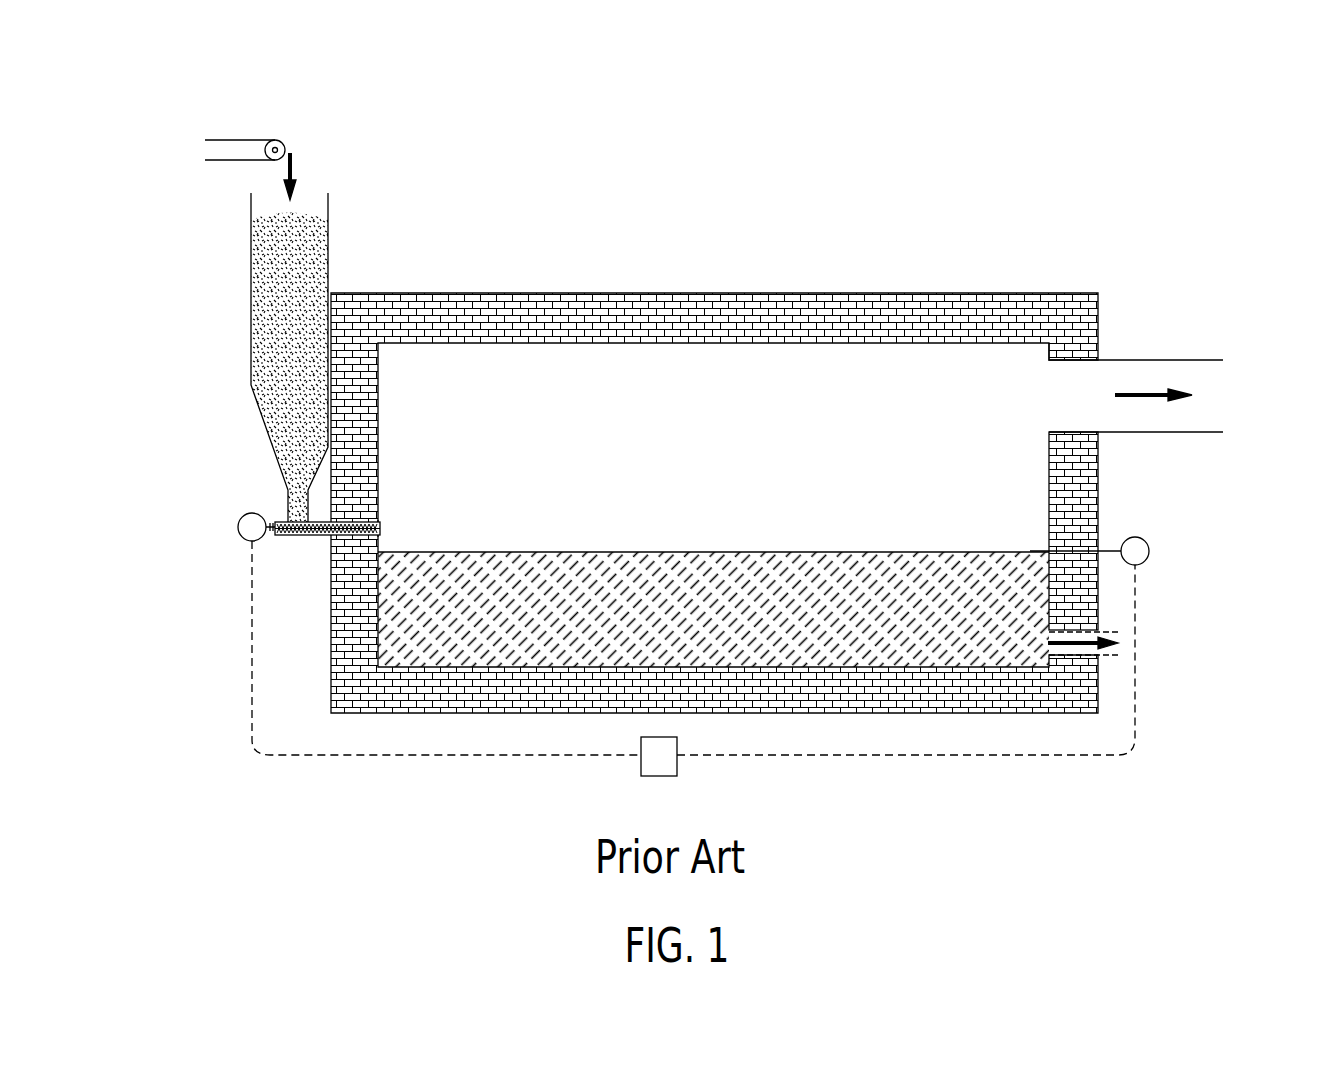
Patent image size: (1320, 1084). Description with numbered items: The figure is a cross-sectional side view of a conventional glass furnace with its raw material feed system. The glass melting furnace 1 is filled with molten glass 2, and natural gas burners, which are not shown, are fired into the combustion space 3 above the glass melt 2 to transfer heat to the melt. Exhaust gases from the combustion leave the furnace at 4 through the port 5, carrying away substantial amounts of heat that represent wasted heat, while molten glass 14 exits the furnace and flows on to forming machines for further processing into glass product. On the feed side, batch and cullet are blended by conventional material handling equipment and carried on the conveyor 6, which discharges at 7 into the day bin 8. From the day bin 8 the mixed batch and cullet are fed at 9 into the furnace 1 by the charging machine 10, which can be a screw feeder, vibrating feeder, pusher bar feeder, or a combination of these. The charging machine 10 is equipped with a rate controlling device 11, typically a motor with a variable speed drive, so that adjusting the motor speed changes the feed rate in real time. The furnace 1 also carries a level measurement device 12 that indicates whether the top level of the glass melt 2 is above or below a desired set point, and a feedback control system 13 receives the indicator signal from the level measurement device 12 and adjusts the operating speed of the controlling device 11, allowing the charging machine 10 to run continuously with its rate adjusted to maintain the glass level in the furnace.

The glass melting furnace 1 is at (710, 320).
The molten glass 2 is at (738, 606).
The combustion space 3 is at (886, 440).
The exhaust gas exit 4 is at (1142, 395).
The port 5 is at (1073, 358).
The conveyor 6 is at (262, 140).
The conveyor discharge 7 is at (290, 167).
The day bin 8 is at (328, 263).
The feed point 9 is at (380, 540).
The charging machine 10 is at (300, 537).
The rate controlling device 11 is at (237, 518).
The level measurement device 12 is at (1150, 553).
The feedback control system 13 is at (668, 766).
The molten glass outflow 14 is at (1100, 645).